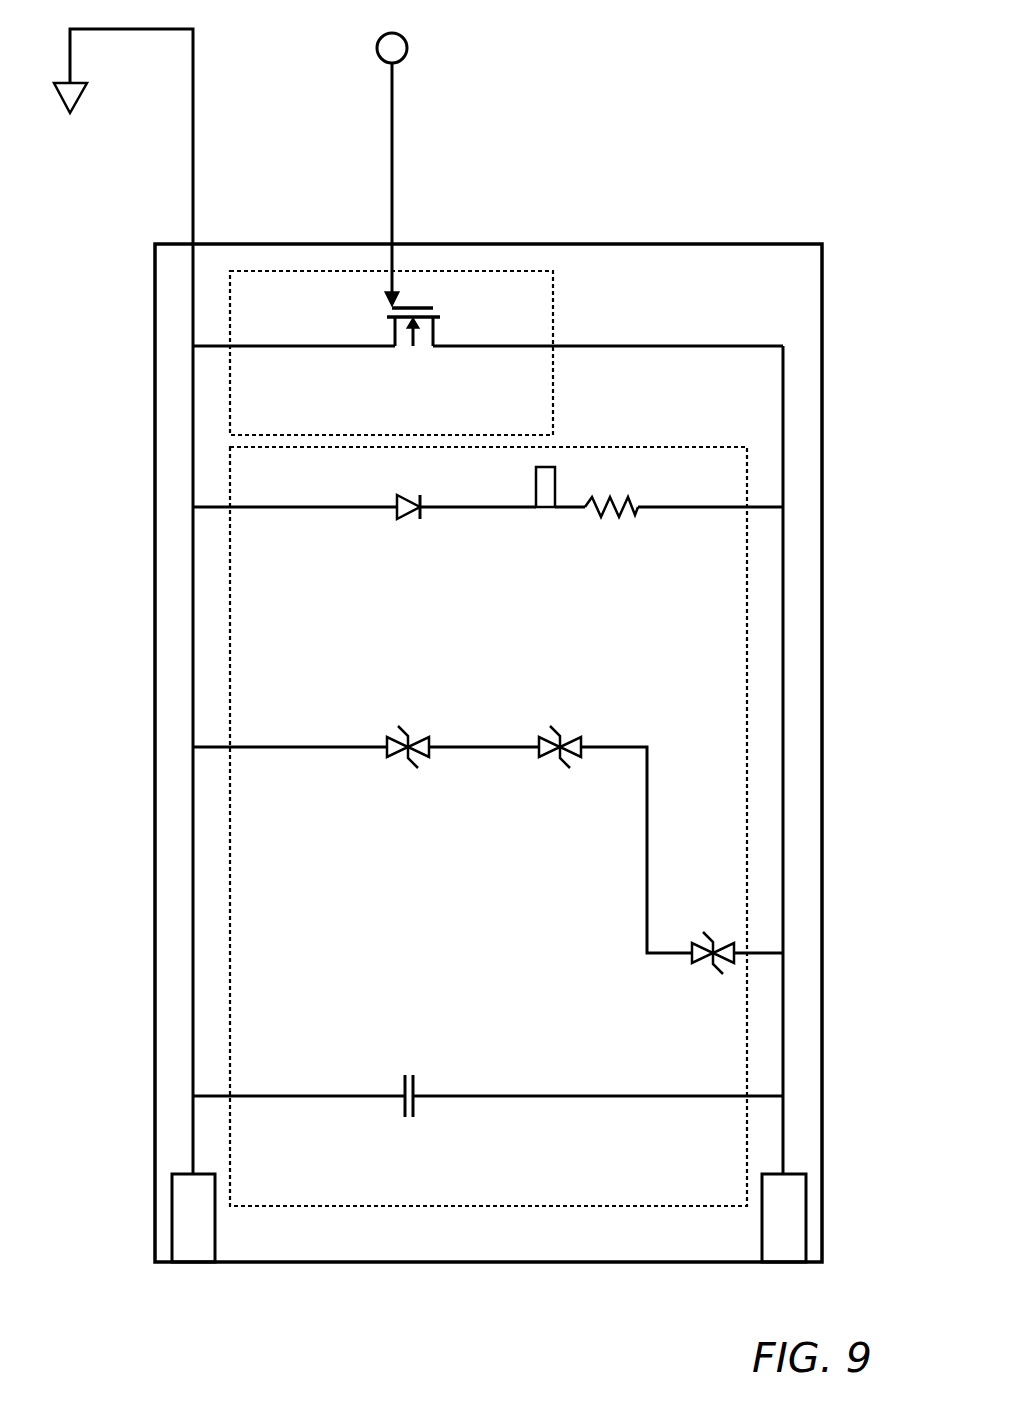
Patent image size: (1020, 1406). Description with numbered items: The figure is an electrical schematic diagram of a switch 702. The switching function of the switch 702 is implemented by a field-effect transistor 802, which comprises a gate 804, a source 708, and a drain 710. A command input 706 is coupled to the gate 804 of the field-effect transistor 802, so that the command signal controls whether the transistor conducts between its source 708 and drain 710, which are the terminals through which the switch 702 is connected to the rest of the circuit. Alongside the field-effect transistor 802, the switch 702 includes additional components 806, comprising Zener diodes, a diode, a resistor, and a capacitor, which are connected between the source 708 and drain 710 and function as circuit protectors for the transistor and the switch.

The switch 702 is at (823, 666).
The command input 706 is at (393, 146).
The source 708 is at (172, 1204).
The drain 710 is at (807, 1196).
The field-effect transistor 802 is at (488, 353).
The gate 804 is at (388, 298).
The additional components 806 is at (587, 1207).